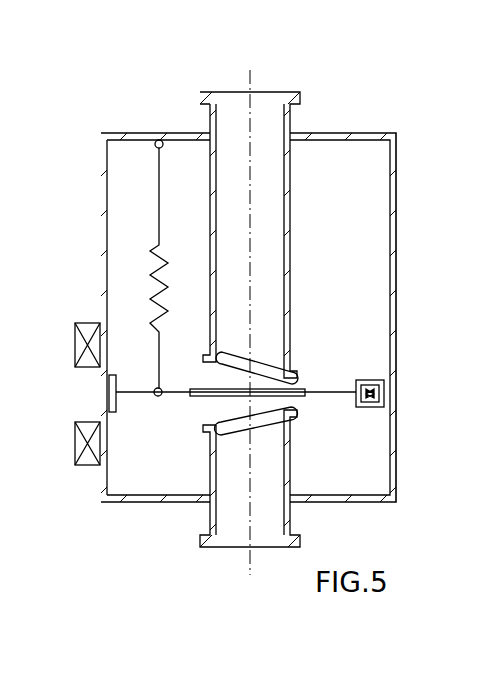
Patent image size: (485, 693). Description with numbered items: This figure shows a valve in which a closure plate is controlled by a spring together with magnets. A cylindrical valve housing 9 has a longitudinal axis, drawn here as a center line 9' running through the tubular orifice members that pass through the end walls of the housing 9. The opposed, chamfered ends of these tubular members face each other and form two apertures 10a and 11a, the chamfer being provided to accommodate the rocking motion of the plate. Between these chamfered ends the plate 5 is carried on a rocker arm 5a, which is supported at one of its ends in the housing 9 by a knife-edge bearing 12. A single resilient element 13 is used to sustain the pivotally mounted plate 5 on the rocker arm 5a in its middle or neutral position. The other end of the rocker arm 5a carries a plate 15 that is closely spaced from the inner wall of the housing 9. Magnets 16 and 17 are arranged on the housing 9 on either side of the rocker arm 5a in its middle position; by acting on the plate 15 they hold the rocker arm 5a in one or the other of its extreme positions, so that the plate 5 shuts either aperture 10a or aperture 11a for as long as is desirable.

The valve housing 9 is at (259, 317).
The flow tube 9' is at (250, 286).
The aperture 10a is at (255, 368).
The aperture 11a is at (258, 422).
The plate 5 is at (300, 386).
The rocker arm 5a is at (174, 392).
The knife-edge bearing 12 is at (370, 390).
The resilient element 13 is at (152, 268).
The plate 15 is at (118, 373).
The magnet 16 is at (88, 322).
The magnet 17 is at (74, 456).